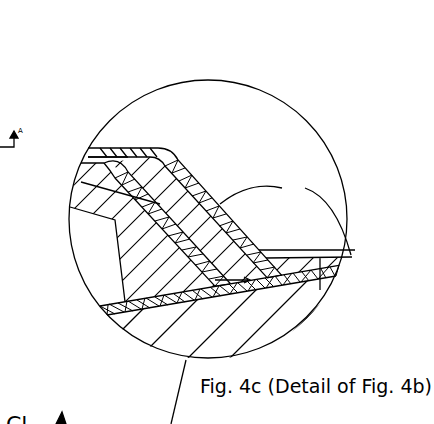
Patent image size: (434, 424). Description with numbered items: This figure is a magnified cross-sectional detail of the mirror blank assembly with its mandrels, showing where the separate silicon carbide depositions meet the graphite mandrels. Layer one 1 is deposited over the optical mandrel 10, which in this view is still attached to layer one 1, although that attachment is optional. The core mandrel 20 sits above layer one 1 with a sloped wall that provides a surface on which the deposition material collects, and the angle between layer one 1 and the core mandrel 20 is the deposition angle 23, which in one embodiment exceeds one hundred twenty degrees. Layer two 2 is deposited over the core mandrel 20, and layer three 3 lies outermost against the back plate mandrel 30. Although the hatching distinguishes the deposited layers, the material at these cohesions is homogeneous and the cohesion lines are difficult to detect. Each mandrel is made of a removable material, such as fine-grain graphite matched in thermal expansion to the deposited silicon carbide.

The layer one 1 is at (282, 285).
The layer two 2 is at (168, 203).
The layer three 3 is at (141, 150).
The optical mandrel 10 is at (168, 330).
The core mandrel 20 is at (143, 248).
The deposition angle 23 is at (325, 235).
The back plate mandrel 30 is at (165, 194).